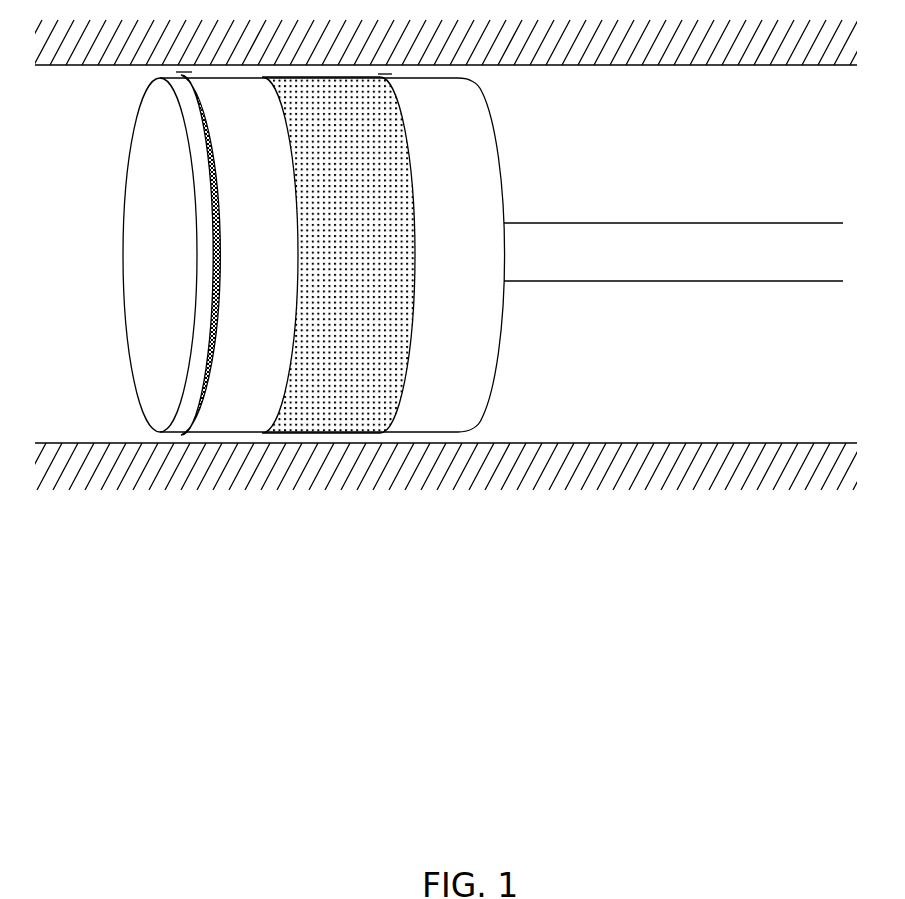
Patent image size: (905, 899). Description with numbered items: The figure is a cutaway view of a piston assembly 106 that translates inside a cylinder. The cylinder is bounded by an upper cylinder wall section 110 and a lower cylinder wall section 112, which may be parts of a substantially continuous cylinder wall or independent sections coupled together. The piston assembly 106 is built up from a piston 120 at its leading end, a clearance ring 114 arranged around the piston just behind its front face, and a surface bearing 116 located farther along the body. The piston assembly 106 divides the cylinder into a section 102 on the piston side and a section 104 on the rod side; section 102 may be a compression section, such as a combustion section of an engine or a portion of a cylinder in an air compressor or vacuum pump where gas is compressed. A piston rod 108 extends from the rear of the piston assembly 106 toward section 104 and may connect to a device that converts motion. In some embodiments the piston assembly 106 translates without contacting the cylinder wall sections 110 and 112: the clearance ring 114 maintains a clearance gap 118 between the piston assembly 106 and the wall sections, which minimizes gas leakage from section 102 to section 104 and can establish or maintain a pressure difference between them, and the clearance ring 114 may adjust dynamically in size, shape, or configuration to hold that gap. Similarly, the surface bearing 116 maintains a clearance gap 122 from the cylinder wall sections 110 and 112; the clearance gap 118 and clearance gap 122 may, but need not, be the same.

The section 102 is at (80, 431).
The section 104 is at (843, 431).
The piston assembly 106 is at (260, 252).
The piston rod 108 is at (651, 223).
The cylinder wall section 110 is at (845, 66).
The cylinder wall section 112 is at (552, 443).
The clearance ring 114 is at (220, 306).
The surface bearing 116 is at (366, 178).
The clearance gap 118 is at (176, 72).
The piston 120 is at (145, 163).
The clearance gap 122 is at (388, 76).